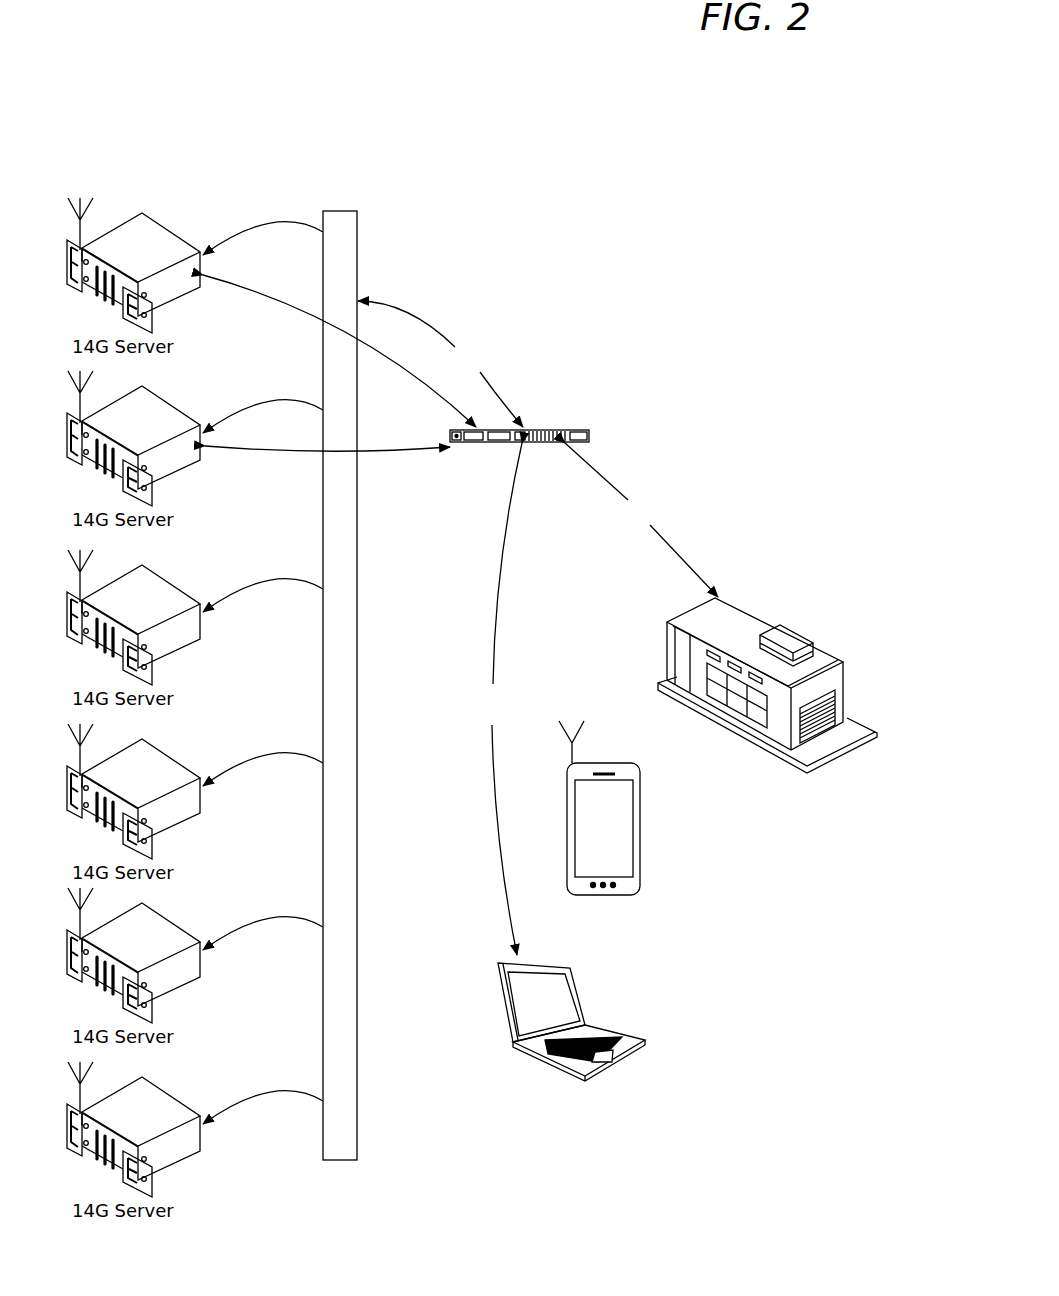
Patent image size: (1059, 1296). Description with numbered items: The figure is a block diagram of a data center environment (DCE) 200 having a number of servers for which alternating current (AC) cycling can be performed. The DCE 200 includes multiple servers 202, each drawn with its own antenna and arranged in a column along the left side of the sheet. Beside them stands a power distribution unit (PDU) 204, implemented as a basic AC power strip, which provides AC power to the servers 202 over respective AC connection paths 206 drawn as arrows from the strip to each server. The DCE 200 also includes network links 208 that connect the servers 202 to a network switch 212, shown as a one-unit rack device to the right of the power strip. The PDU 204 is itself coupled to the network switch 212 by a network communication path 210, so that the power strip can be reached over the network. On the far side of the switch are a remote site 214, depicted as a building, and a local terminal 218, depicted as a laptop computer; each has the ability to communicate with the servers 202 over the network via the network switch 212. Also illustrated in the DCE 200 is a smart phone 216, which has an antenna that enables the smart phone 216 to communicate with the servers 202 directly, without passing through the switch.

The data center environment (DCE) 200 is at (258, 143).
The servers 202 is at (189, 195).
The power distribution unit (PDU) 204 is at (417, 248).
The AC connection paths 206 is at (286, 176).
The network links 208 is at (245, 331).
The network communication path 210 is at (504, 340).
The network switch 212 is at (699, 480).
The remote site 214 is at (811, 608).
The smart phone 216 is at (689, 871).
The local terminal 218 is at (644, 1013).